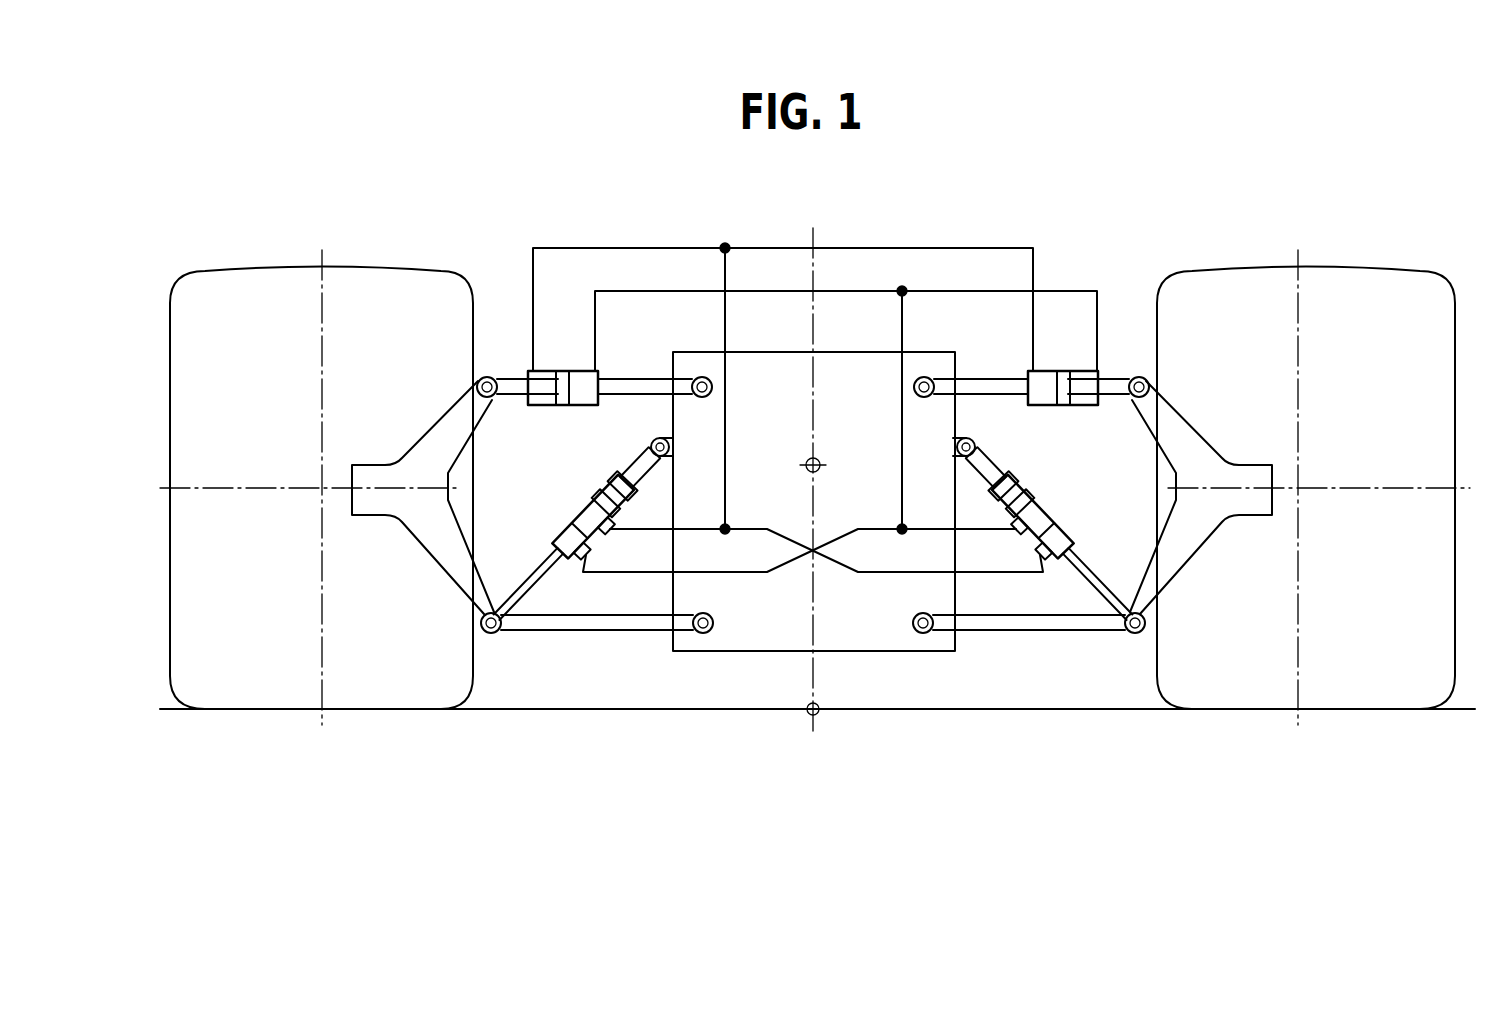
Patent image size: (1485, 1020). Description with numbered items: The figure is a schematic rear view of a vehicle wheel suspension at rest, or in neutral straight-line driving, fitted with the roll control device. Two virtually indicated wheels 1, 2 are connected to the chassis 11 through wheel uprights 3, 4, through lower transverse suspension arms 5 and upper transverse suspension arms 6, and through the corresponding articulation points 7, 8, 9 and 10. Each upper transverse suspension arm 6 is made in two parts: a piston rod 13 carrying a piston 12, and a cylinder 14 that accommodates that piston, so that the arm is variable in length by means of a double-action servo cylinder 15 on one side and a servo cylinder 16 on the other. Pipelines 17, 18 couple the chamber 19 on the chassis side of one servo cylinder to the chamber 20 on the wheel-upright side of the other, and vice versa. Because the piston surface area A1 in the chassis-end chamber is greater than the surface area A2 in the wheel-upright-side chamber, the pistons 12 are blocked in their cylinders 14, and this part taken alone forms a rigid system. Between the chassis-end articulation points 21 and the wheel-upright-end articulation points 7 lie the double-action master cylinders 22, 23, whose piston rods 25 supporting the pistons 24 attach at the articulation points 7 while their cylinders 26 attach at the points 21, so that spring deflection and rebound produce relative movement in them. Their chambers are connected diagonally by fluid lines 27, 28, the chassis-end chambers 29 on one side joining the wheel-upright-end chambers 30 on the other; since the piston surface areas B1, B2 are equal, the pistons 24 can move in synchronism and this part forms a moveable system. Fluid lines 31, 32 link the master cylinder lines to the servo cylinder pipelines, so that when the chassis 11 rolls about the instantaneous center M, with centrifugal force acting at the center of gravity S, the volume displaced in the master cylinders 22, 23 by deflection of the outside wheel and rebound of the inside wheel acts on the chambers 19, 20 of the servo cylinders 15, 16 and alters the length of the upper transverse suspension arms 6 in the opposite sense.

The wheel 1 is at (216, 288).
The wheel 2 is at (1394, 288).
The wheel upright 3 is at (374, 514).
The wheel upright 4 is at (1242, 514).
The lower transverse suspension arm 5 is at (572, 634).
The upper transverse suspension arm 6 is at (630, 378).
The articulation point 7 is at (494, 635).
The articulation point 8 is at (704, 636).
The articulation point 9 is at (480, 382).
The articulation point 10 is at (703, 377).
The chassis 11 is at (782, 642).
The piston 12 is at (565, 370).
The piston rod 13 is at (513, 378).
The cylinder 14 is at (564, 407).
The servo cylinder 15 is at (601, 371).
The servo cylinder 16 is at (1027, 371).
The pipeline 17 is at (762, 257).
The pipeline 18 is at (878, 252).
The chamber 19 is at (590, 400).
The chamber 20 is at (540, 405).
The articulation point 21 is at (669, 447).
The master cylinder 22 is at (538, 543).
The master cylinder 23 is at (1088, 543).
The piston 24 is at (568, 520).
The piston rod 25 is at (540, 573).
The cylinder 26 is at (607, 535).
The fluid line 27 is at (736, 573).
The fluid line 28 is at (888, 573).
The chamber 29 is at (592, 500).
The chamber 30 is at (552, 530).
The fluid line 31 is at (729, 397).
The fluid line 32 is at (900, 397).
The center of gravity S is at (818, 463).
The instantaneous center M is at (820, 715).
The piston surface area A1 is at (573, 393).
The piston surface area A2 is at (548, 370).
The piston surface area B1 is at (604, 512).
The piston surface area B2 is at (584, 560).